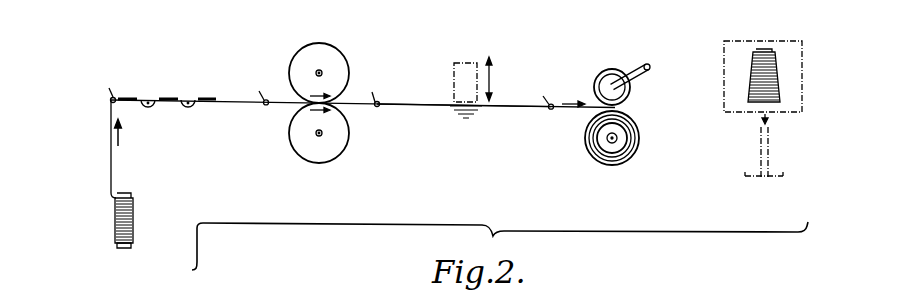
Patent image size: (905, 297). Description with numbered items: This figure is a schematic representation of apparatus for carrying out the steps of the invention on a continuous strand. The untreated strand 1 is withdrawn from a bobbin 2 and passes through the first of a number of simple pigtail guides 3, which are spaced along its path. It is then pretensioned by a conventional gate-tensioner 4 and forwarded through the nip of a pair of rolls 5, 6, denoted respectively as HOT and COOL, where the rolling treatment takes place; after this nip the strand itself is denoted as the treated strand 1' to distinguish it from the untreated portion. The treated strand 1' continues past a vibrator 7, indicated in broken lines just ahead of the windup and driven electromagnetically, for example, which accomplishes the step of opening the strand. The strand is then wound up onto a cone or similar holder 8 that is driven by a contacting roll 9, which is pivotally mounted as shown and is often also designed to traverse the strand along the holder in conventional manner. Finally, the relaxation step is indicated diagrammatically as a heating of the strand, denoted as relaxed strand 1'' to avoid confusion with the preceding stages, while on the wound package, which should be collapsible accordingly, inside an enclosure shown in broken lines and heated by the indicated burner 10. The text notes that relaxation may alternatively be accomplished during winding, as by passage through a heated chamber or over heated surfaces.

The strand 1 is at (336, 149).
The treated strand 1' is at (464, 88).
The relaxed strand 1'' is at (738, 71).
The bobbin 2 is at (128, 193).
The pigtail guides 3 is at (113, 97).
The gate-tensioner 4 is at (168, 104).
The hot roll 5 is at (340, 62).
The cool roll 6 is at (341, 143).
The vibrator 7 is at (471, 60).
The cone or holder 8 is at (620, 135).
The contacting roll 9 is at (618, 70).
The burner 10 is at (770, 152).